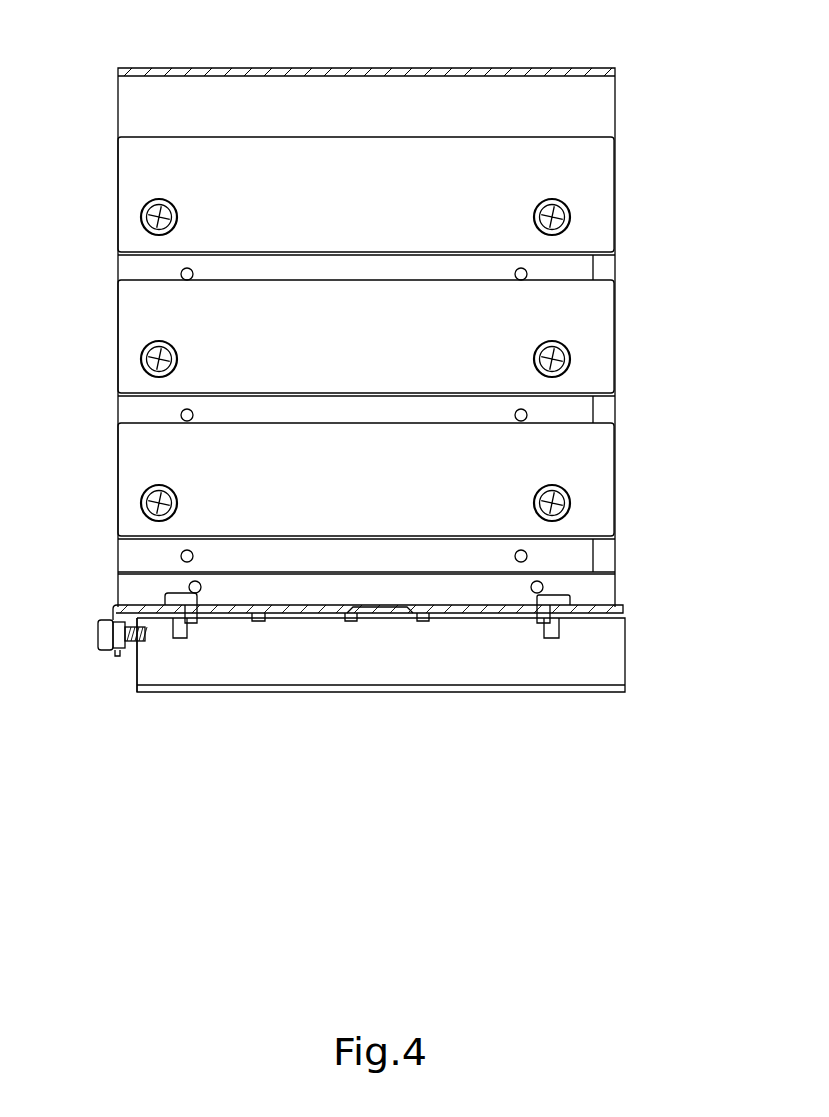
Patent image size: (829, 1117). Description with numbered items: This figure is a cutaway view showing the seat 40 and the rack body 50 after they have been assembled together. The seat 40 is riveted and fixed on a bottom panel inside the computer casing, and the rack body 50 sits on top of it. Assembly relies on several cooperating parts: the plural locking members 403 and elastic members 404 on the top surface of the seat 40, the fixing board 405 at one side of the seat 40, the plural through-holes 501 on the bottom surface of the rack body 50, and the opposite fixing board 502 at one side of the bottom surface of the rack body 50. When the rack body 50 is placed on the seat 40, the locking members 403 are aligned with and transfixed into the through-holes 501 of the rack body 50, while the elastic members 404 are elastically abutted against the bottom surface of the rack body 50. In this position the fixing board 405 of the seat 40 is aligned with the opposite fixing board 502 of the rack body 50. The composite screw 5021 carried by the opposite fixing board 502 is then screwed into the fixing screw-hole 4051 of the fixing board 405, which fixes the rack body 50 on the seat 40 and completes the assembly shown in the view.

The rack body 50 is at (598, 105).
The through-holes 501 is at (453, 610).
The opposite fixing board 502 is at (117, 657).
The composite screw 5021 is at (107, 630).
The seat 40 is at (605, 618).
The locking members 403 is at (553, 602).
The elastic members 404 is at (515, 618).
The fixing board 405 is at (135, 663).
The fixing screw-hole 4051 is at (138, 643).